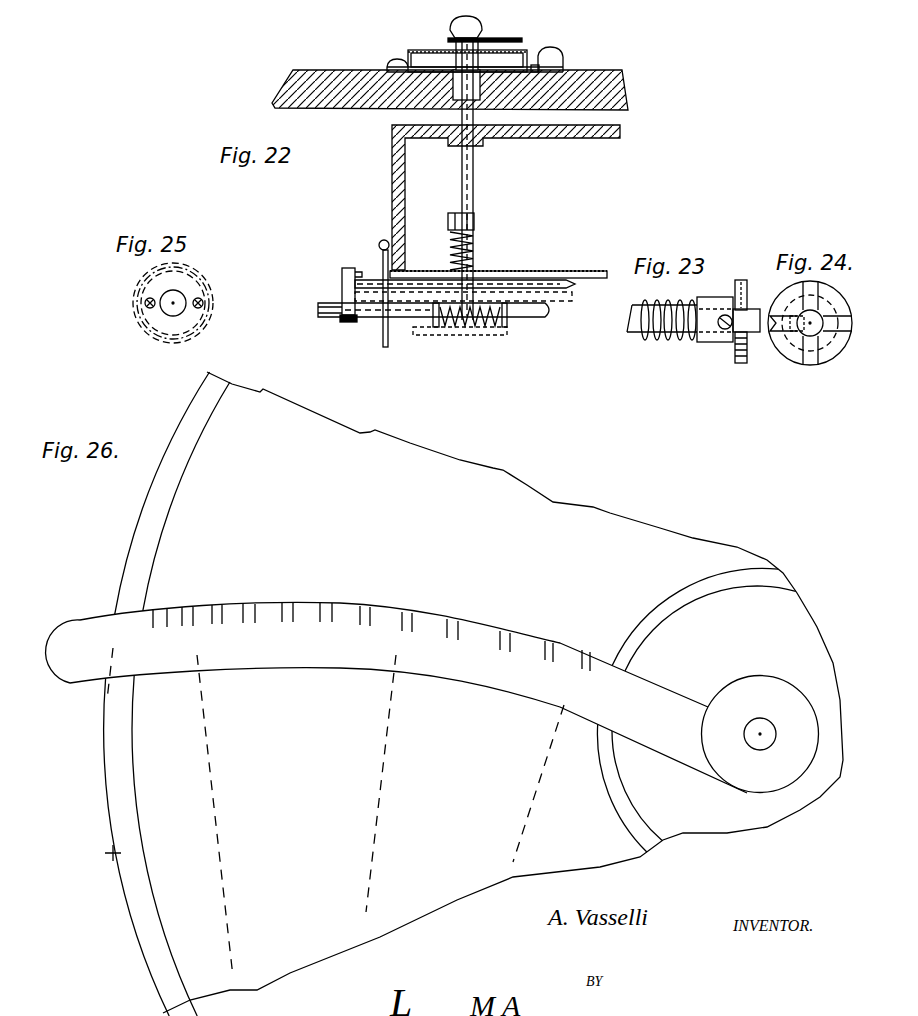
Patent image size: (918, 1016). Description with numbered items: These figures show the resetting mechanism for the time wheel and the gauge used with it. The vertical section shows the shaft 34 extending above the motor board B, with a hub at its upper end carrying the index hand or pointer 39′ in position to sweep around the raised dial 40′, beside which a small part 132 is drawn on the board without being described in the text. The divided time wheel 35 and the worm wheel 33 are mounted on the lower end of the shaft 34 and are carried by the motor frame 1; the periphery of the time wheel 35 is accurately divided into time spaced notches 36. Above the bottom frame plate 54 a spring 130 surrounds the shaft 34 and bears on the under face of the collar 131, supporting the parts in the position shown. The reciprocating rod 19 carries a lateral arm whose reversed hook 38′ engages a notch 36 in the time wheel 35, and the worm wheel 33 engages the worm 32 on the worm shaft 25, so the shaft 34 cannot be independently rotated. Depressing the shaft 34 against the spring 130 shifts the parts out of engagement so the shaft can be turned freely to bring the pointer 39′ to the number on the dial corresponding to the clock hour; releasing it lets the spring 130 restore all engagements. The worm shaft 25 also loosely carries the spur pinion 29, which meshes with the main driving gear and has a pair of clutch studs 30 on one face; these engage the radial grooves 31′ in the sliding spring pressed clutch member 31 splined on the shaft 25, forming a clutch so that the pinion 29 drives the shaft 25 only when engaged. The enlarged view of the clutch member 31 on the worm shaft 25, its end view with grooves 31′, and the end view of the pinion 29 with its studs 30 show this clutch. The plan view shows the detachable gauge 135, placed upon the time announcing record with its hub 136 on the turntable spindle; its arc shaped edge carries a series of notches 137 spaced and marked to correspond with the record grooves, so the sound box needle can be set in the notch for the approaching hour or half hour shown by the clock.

In FIG. 22, the motor board B is at (598, 78).
In FIG. 22, the frame 1 is at (551, 136).
In FIG. 22, the shaft 34 is at (474, 184).
In FIG. 22, the index hand or pointer 39′ is at (500, 40).
In FIG. 22, the raised dial 40′ is at (428, 50).
In FIG. 22, the latch 132 is at (563, 62).
In FIG. 22, the collar 131 is at (476, 223).
In FIG. 22, the spring 130 is at (476, 248).
In FIG. 22, the bottom frame plate 54 is at (531, 274).
In FIG. 22, the hook 38′ is at (346, 268).
In FIG. 22, the worm shaft 25 is at (397, 319).
In FIG. 25, the worm shaft 25 is at (170, 314).
In FIG. 23, the worm shaft 25 is at (633, 333).
In FIG. 22, the divided time wheel 35 is at (578, 286).
In FIG. 22, the time spaced notches 36 is at (566, 300).
In FIG. 22, the rod 19 is at (328, 319).
In FIG. 22, the worm wheel 33 is at (446, 327).
In FIG. 22, the worm 32 is at (477, 327).
In FIG. 25, the spur pinion 29 is at (193, 283).
In FIG. 25, the clutch studs 30 is at (146, 306).
In FIG. 23, the sliding spring pressed clutch member 31 is at (708, 343).
In FIG. 24, the radial grooves 31′ is at (848, 325).
In FIG. 26, the detachable gauge 135 is at (68, 685).
In FIG. 26, the hub 136 is at (742, 779).
In FIG. 26, the notches 137 is at (218, 604).